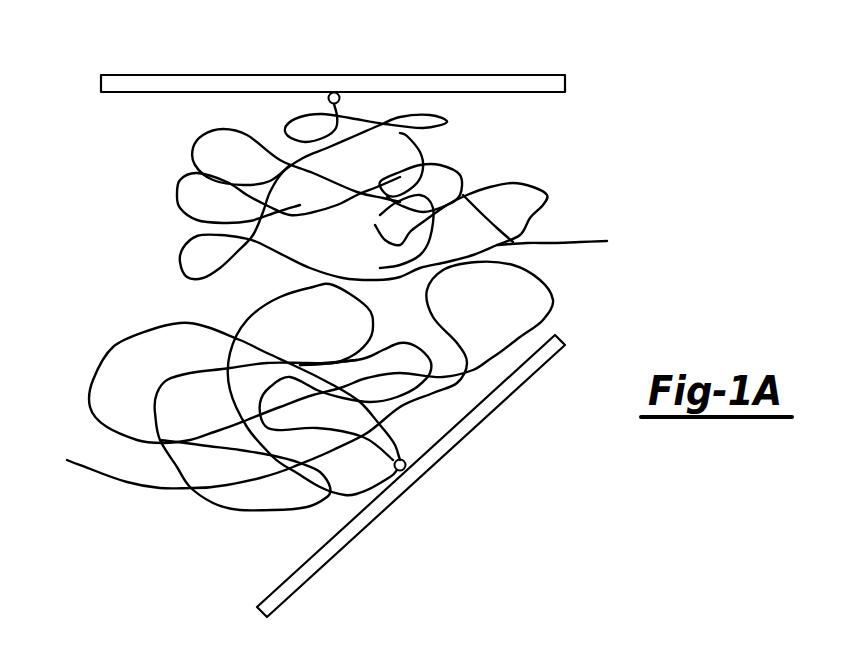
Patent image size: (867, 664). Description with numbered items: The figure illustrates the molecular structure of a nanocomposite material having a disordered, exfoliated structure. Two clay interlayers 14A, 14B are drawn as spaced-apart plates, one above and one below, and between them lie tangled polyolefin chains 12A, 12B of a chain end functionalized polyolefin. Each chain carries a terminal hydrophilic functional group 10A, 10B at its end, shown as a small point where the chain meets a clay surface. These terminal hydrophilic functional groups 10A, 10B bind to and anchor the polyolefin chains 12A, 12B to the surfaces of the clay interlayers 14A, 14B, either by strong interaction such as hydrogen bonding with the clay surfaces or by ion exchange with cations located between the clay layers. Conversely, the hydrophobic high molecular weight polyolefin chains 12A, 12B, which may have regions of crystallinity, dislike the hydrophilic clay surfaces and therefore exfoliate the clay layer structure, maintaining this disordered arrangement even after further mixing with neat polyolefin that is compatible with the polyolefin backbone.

The terminal hydrophilic functional group 10A is at (329, 98).
The terminal hydrophilic functional group 10B is at (396, 469).
The polyolefin chain 12A is at (181, 249).
The polyolefin chain 12B is at (148, 328).
The clay interlayer 14A is at (412, 76).
The clay interlayer 14B is at (497, 407).